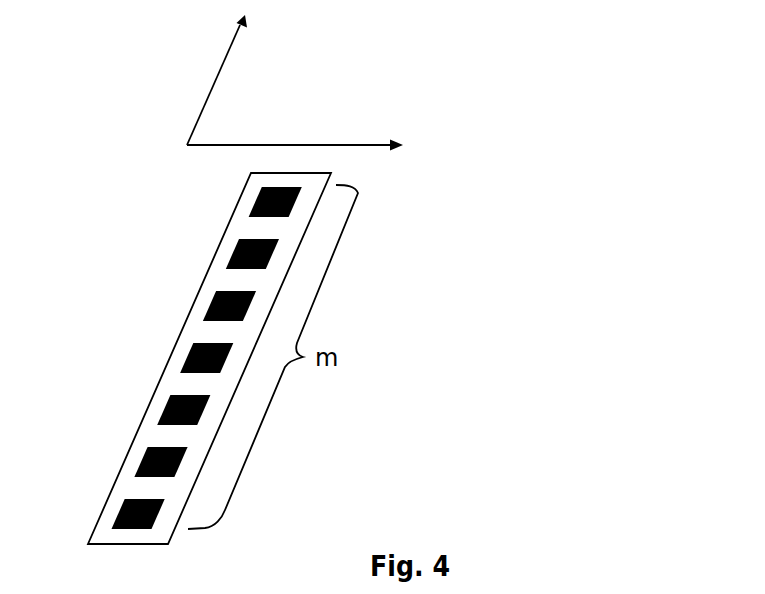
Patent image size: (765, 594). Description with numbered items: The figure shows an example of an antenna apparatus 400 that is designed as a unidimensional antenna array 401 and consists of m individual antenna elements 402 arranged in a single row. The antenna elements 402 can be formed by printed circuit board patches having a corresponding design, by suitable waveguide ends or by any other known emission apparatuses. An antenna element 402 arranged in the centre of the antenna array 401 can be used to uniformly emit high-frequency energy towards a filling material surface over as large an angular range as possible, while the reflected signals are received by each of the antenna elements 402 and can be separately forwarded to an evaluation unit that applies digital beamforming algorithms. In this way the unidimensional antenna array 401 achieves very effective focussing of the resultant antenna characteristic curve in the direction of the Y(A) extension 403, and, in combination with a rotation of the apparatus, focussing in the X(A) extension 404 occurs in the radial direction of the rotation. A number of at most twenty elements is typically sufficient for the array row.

The antenna apparatus 400 is at (447, 242).
The unidimensional antenna array 401 is at (170, 538).
The antenna elements 402 is at (195, 345).
The Y(A) extension 403 is at (217, 79).
The X(A) extension 404 is at (332, 145).